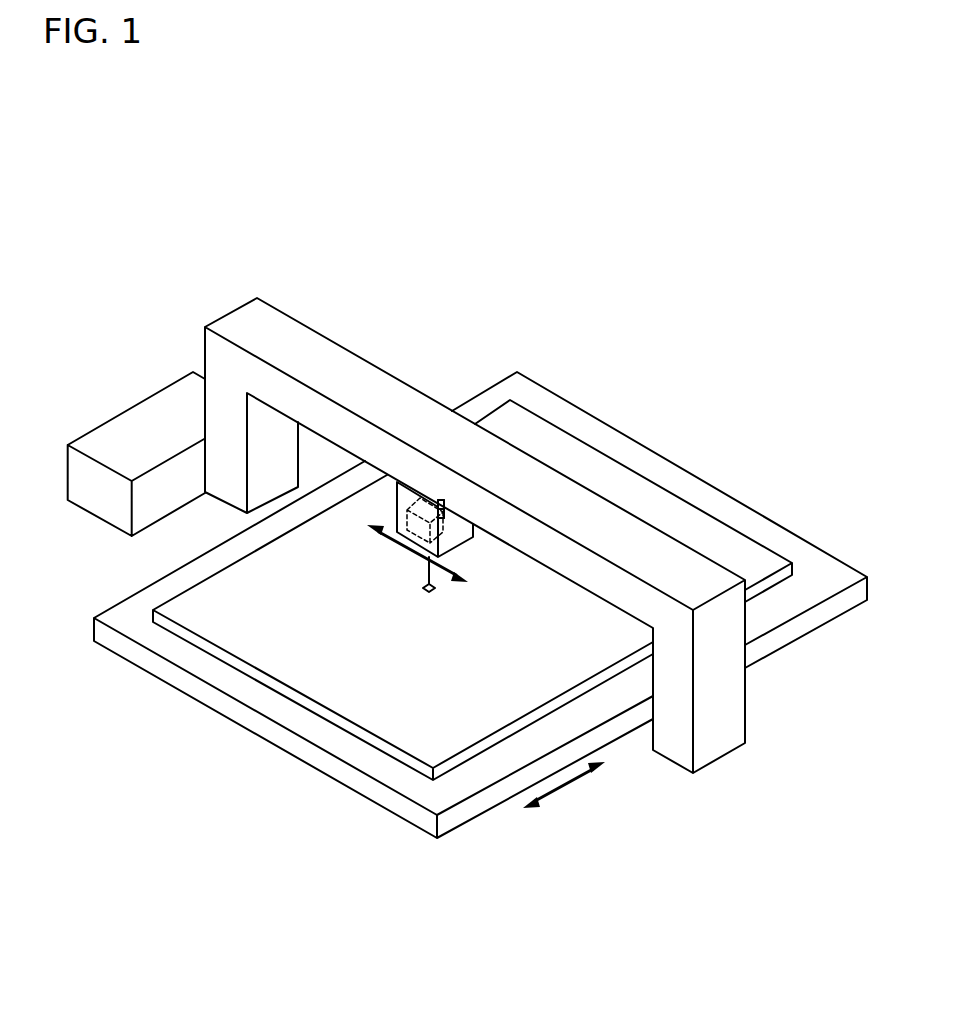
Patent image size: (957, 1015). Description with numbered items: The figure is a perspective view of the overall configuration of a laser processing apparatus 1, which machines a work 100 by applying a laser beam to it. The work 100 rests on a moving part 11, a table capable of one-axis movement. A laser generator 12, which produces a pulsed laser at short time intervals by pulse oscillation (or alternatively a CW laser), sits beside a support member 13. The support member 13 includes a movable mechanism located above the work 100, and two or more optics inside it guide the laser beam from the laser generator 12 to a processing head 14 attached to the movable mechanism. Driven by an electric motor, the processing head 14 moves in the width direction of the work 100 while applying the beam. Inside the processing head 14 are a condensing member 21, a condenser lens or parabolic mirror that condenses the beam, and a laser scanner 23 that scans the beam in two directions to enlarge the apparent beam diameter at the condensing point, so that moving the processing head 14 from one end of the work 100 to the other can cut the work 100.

The laser processing apparatus 1 is at (828, 203).
The moving part 11 is at (608, 731).
The laser generator 12 is at (145, 423).
The support member 13 is at (327, 353).
The processing head 14 is at (467, 543).
The condensing member 21 is at (441, 500).
The laser scanner 23 is at (404, 513).
The work 100 is at (210, 605).